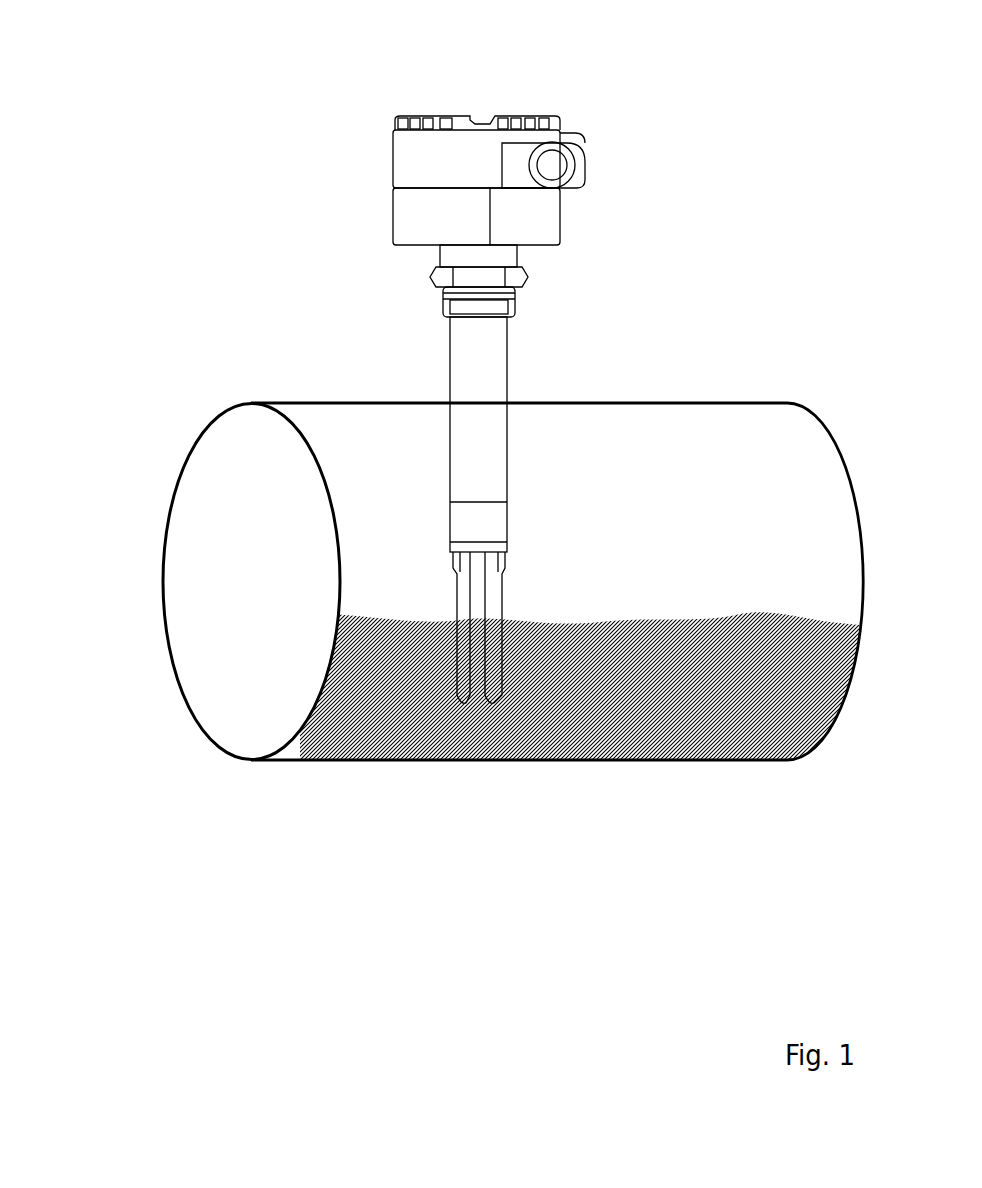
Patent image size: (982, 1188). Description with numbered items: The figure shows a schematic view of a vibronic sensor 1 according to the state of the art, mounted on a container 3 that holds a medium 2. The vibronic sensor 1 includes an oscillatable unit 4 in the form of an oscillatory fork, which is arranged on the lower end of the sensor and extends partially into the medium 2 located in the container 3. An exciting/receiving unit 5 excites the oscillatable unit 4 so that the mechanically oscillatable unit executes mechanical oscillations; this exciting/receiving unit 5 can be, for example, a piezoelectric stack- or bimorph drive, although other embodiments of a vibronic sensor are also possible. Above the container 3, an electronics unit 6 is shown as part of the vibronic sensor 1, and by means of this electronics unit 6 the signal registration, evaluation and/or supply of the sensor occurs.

The vibronic sensor 1 is at (58, 2).
The medium 2 is at (623, 688).
The container 3 is at (516, 696).
The oscillatable unit 4 is at (482, 636).
The exciting/receiving unit 5 is at (450, 520).
The electronics unit 6 is at (537, 218).